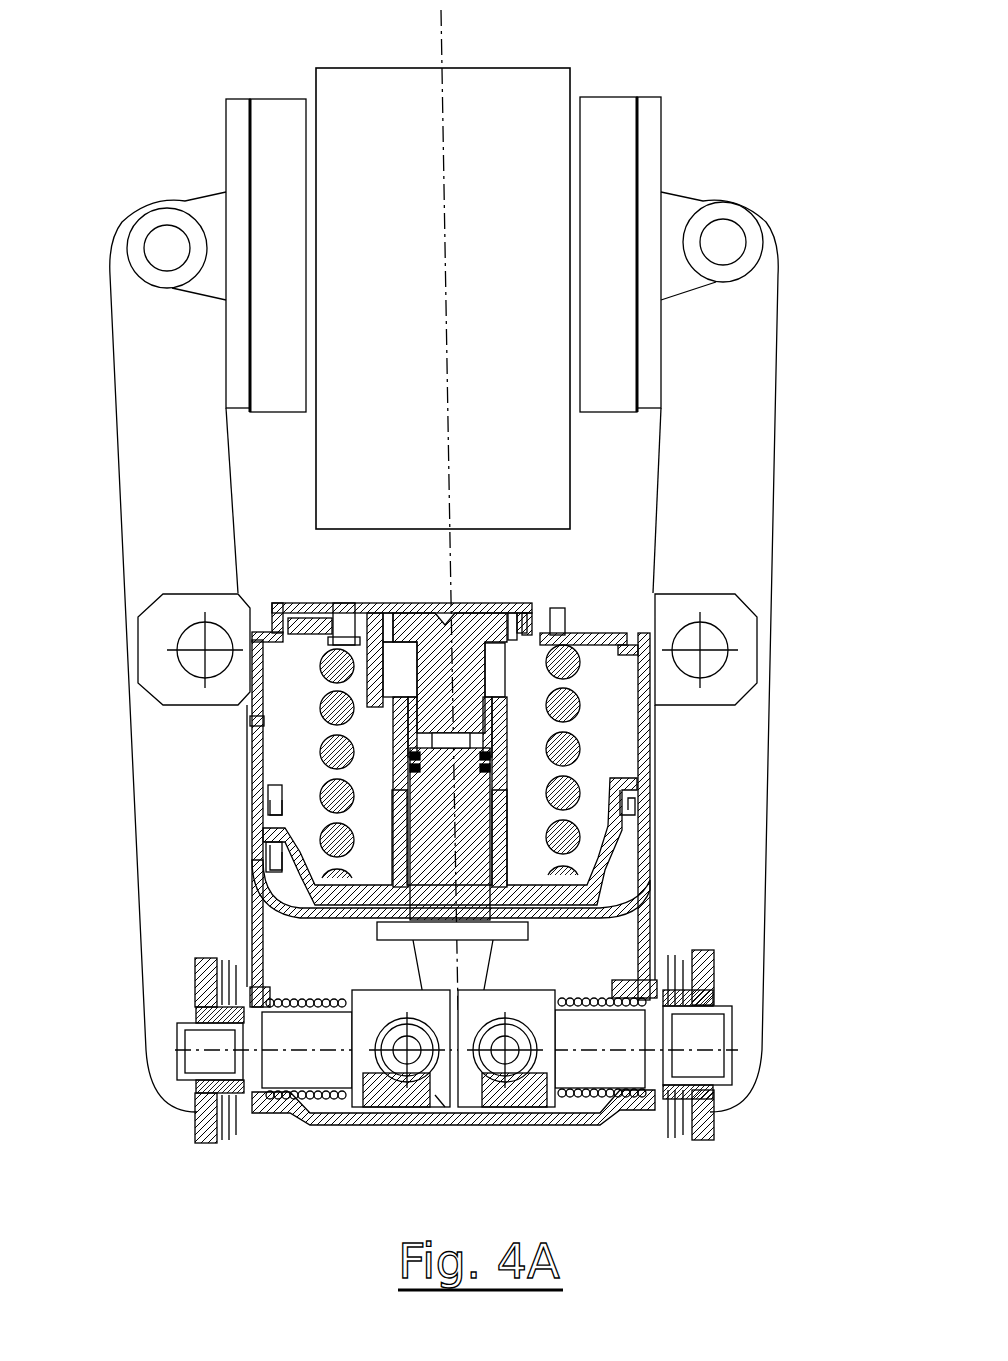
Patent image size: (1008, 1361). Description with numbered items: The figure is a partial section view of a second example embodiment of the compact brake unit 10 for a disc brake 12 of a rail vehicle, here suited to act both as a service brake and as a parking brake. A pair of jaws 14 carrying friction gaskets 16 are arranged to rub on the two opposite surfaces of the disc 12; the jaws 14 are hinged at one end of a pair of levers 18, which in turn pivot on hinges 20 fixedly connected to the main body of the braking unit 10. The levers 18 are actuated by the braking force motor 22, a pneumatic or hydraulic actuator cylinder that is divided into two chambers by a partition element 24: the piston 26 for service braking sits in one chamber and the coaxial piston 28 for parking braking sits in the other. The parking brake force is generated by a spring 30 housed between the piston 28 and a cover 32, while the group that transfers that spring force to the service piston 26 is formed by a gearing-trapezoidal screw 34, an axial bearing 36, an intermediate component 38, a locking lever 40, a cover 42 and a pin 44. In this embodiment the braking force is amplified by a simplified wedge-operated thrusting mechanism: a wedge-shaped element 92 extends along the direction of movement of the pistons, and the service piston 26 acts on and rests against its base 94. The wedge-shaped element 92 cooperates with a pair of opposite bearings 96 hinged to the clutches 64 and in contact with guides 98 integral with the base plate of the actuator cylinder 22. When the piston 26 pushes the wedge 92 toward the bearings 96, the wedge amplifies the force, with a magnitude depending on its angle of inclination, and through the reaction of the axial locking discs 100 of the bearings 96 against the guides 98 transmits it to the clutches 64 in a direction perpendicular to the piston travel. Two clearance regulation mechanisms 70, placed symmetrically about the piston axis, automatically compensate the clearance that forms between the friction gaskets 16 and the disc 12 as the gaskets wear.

The compact brake unit 10 is at (812, 178).
The disc brake 12 is at (527, 90).
The jaws 14 is at (232, 118).
The friction gaskets 16 is at (276, 118).
The levers 18 is at (162, 400).
The hinges 20 is at (163, 615).
The braking force motor 22 is at (662, 727).
The partition element 24 is at (632, 822).
The piston for service braking 26 is at (626, 870).
The piston for parking braking 28 is at (641, 774).
The spring 30 is at (335, 760).
The cover 32 is at (597, 633).
The gearing-trapezoidal screw 34 is at (418, 620).
The axial bearing 36 is at (410, 770).
The intermediate component 38 is at (432, 745).
The locking lever 40 is at (300, 612).
The cover 42 is at (497, 603).
The pin 44 is at (347, 608).
The clutches 64 is at (347, 1072).
The clearance regulation mechanisms 70 is at (282, 1077).
The wedge-shaped element 92 is at (472, 952).
The base 94 is at (382, 928).
The bearings 96 is at (405, 1088).
The guides 98 is at (416, 1090).
The axial locking discs 100 is at (436, 1097).